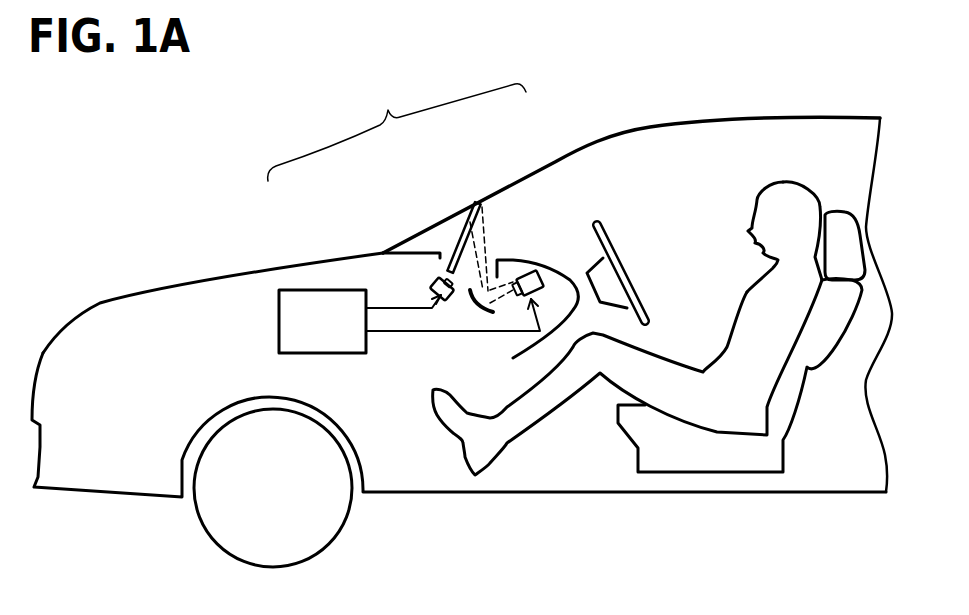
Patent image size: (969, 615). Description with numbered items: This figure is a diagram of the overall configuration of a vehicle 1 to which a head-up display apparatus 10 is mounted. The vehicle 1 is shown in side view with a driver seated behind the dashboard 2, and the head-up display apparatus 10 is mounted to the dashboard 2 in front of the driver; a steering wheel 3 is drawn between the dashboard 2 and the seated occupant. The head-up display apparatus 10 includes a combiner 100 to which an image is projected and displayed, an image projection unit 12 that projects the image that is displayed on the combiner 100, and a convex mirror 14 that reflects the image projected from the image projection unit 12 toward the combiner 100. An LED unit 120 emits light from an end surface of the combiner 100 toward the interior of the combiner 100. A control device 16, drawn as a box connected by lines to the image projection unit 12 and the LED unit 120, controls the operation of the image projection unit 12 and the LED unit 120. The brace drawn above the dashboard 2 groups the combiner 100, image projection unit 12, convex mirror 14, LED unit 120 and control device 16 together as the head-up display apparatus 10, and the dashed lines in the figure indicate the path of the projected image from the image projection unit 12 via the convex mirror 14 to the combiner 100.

The vehicle 1 is at (243, 274).
The head-up display apparatus 10 is at (397, 130).
The image projection unit 12 is at (524, 270).
The convex mirror 14 is at (490, 306).
The control device 16 is at (337, 290).
The combiner 100 is at (470, 222).
The LED unit 120 is at (433, 278).
The dashboard 2 is at (531, 262).
The steering wheel 3 is at (612, 238).